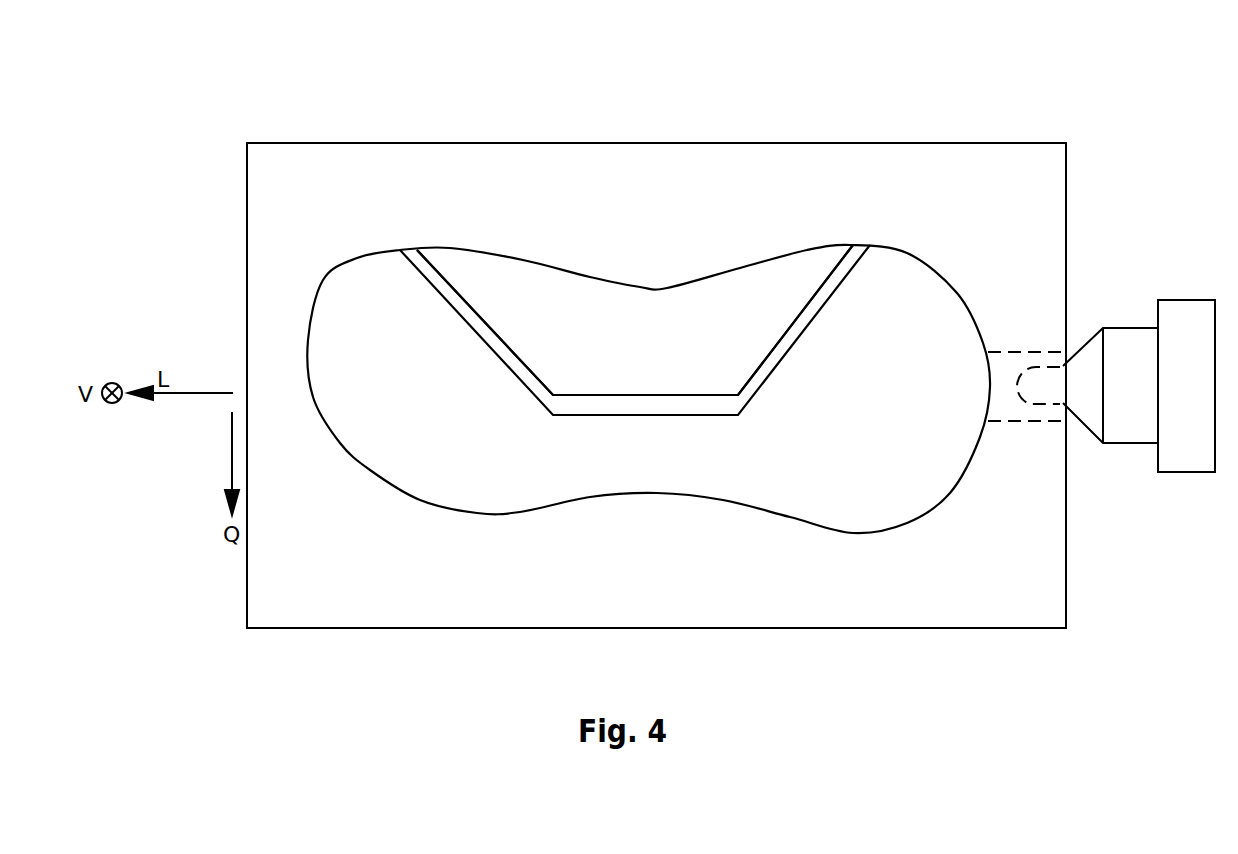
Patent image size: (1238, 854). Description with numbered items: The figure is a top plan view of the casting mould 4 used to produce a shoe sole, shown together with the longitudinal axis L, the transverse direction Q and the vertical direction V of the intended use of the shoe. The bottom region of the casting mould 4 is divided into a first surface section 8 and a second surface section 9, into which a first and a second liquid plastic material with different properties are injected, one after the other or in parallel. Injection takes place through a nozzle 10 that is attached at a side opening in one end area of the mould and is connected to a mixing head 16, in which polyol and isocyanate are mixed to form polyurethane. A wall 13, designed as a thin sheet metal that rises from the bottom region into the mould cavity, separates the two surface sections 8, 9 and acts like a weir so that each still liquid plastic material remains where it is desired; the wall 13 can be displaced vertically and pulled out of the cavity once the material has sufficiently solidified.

The casting mould 4 is at (287, 172).
The first surface section 8 is at (499, 449).
The second surface section 9 is at (621, 334).
The nozzle 10 is at (1045, 378).
The wall 13 is at (678, 405).
The mixing head 16 is at (1177, 327).